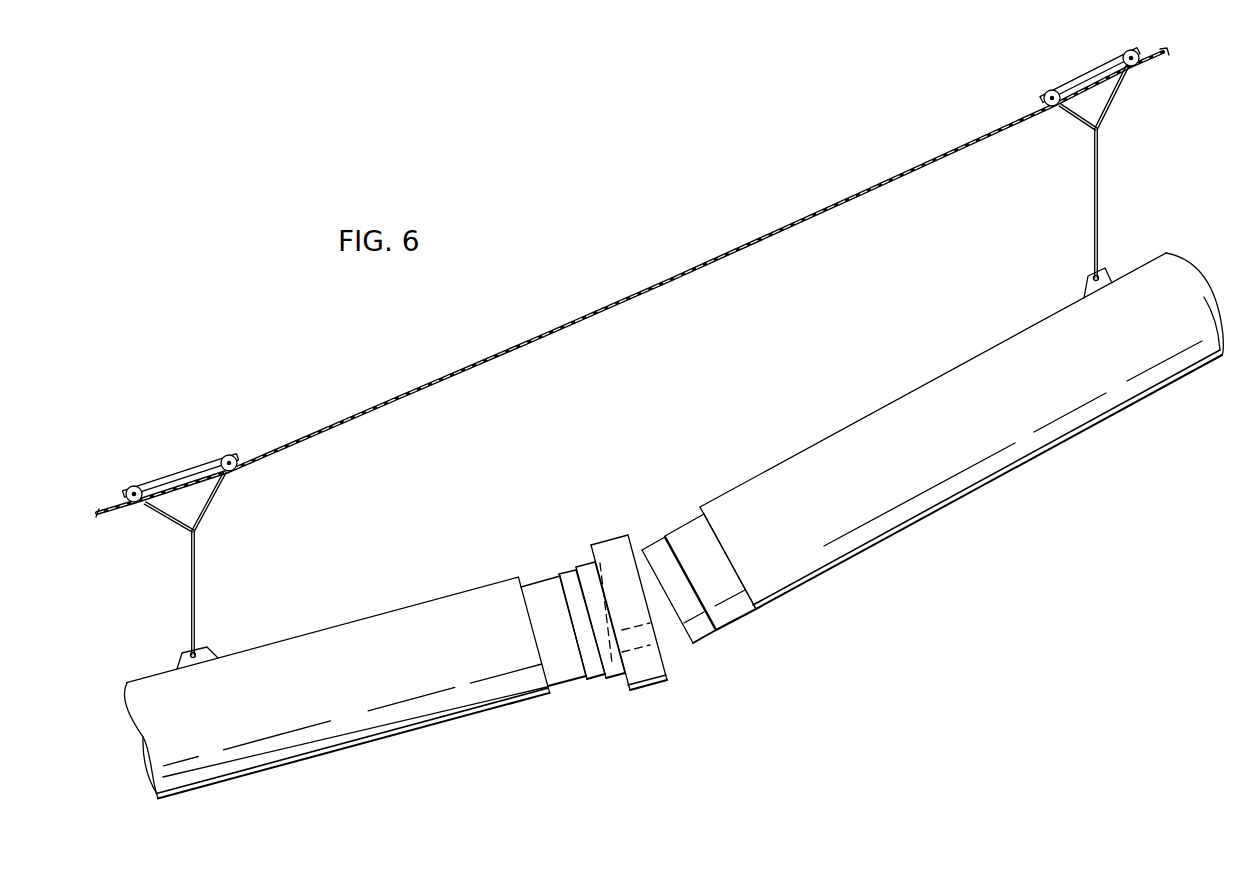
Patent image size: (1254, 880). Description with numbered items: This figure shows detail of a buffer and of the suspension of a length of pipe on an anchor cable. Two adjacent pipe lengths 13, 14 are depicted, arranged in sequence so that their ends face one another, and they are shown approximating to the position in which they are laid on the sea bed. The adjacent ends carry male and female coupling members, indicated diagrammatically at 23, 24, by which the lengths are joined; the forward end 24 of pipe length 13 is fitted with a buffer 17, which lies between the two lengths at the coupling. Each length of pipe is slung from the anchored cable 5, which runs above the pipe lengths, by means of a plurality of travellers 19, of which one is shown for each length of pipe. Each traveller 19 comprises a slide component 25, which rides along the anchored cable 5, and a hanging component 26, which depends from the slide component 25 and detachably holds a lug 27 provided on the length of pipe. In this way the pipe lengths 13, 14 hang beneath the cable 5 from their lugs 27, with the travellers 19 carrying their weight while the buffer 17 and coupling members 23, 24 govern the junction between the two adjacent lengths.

The anchored cable 5 is at (601, 309).
The pipe length 13 is at (352, 715).
The pipe length 14 is at (884, 510).
The buffer 17 is at (646, 684).
The traveller 19 is at (177, 539).
The coupling member 23 is at (697, 638).
The coupling member 24 is at (610, 678).
The slide component 25 is at (187, 473).
The hanging component 26 is at (197, 597).
The lug 27 is at (180, 663).